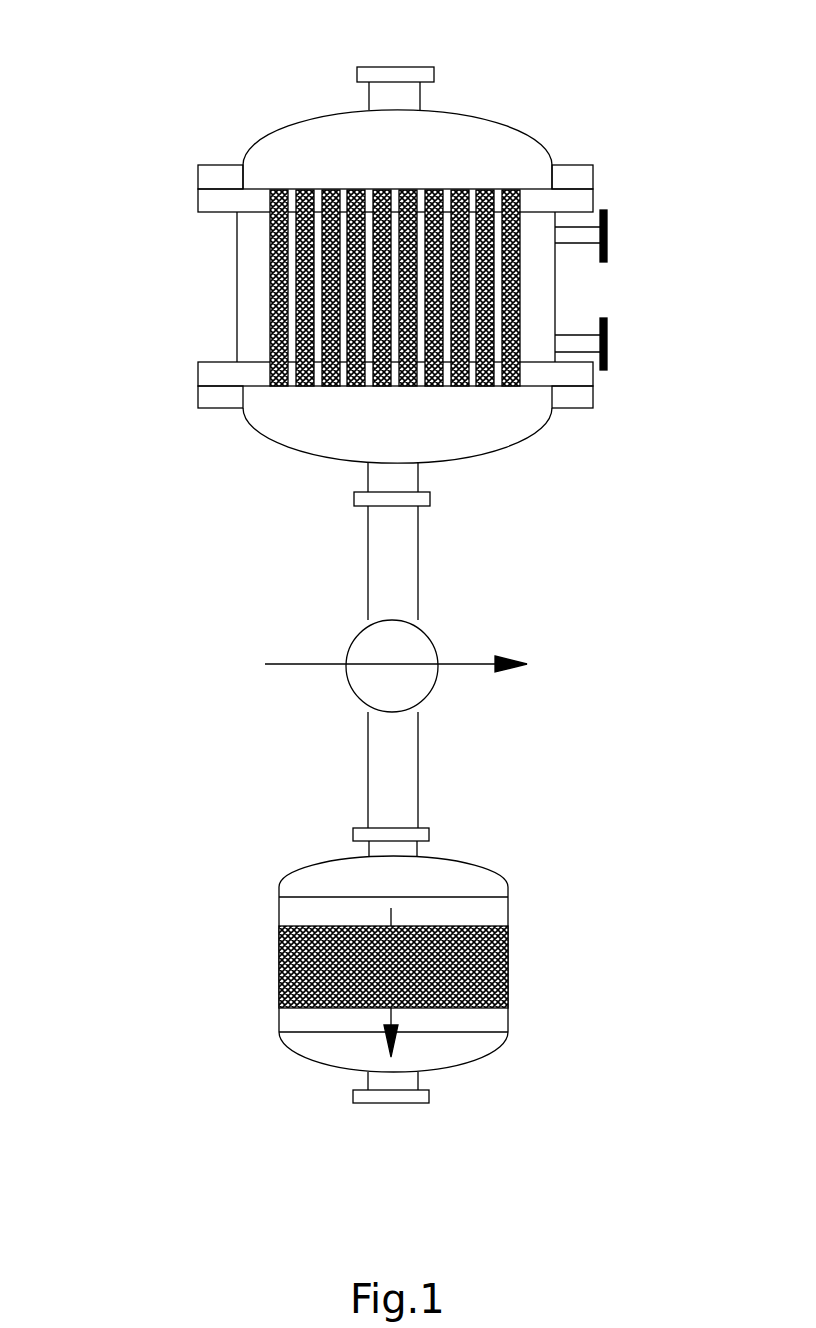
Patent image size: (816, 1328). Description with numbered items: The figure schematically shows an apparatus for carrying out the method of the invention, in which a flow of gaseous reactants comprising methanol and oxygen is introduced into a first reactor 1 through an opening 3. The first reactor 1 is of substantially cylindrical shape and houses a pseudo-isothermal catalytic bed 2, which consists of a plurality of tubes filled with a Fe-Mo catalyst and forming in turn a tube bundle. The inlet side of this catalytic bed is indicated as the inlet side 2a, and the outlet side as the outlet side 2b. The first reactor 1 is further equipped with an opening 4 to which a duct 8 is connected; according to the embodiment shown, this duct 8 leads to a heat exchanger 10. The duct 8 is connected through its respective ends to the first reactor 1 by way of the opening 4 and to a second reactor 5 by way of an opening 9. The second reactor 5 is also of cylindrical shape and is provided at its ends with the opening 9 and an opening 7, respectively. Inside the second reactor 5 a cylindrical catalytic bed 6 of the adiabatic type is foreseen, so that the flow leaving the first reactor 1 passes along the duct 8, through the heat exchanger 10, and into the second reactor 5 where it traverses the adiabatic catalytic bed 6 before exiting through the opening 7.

The first reactor 1 is at (177, 198).
The pseudo-isothermal catalytic bed 2 is at (250, 296).
The inlet side of catalytic bed 2a is at (253, 212).
The outlet side of catalytic bed 2b is at (250, 362).
The opening 3 is at (400, 68).
The opening 4 is at (430, 497).
The reactor 5 is at (177, 885).
The cylindrical catalytic bed 6 is at (279, 955).
The opening 7 is at (393, 1104).
The duct 8 is at (368, 565).
The opening 9 is at (429, 833).
The heat exchanger 10 is at (433, 638).